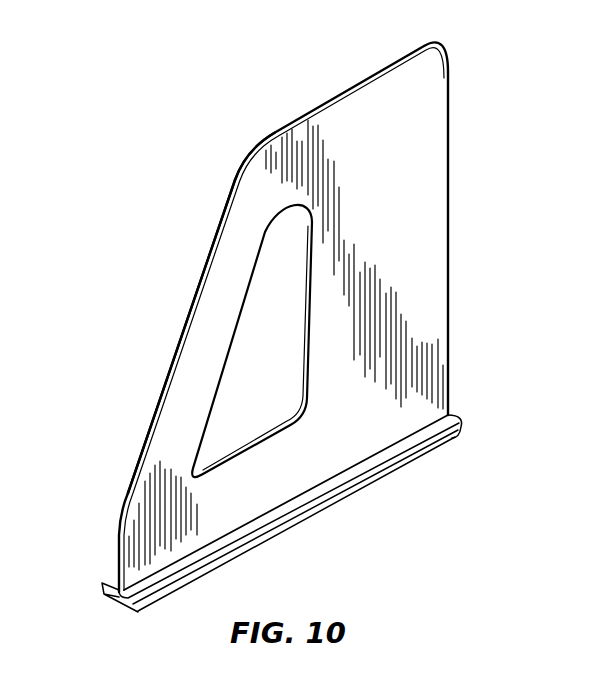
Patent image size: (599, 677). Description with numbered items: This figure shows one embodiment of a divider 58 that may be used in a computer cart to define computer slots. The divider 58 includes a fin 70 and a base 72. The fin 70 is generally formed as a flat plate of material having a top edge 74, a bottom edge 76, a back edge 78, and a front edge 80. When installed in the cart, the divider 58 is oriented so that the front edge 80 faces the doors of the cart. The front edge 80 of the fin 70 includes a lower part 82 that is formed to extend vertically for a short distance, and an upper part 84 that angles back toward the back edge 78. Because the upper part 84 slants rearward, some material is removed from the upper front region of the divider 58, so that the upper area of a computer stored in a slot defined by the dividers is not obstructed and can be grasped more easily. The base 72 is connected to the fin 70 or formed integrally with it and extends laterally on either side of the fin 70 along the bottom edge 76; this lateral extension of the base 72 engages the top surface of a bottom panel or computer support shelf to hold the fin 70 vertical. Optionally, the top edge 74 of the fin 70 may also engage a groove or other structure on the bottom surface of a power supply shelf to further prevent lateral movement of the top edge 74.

The divider 58 is at (474, 66).
The fin 70 is at (438, 284).
The base 72 is at (375, 478).
The top edge 74 is at (337, 92).
The bottom edge 76 is at (330, 477).
The back edge 78 is at (448, 203).
The front edge 80 is at (134, 421).
The lower part 82 is at (118, 558).
The upper part 84 is at (176, 344).